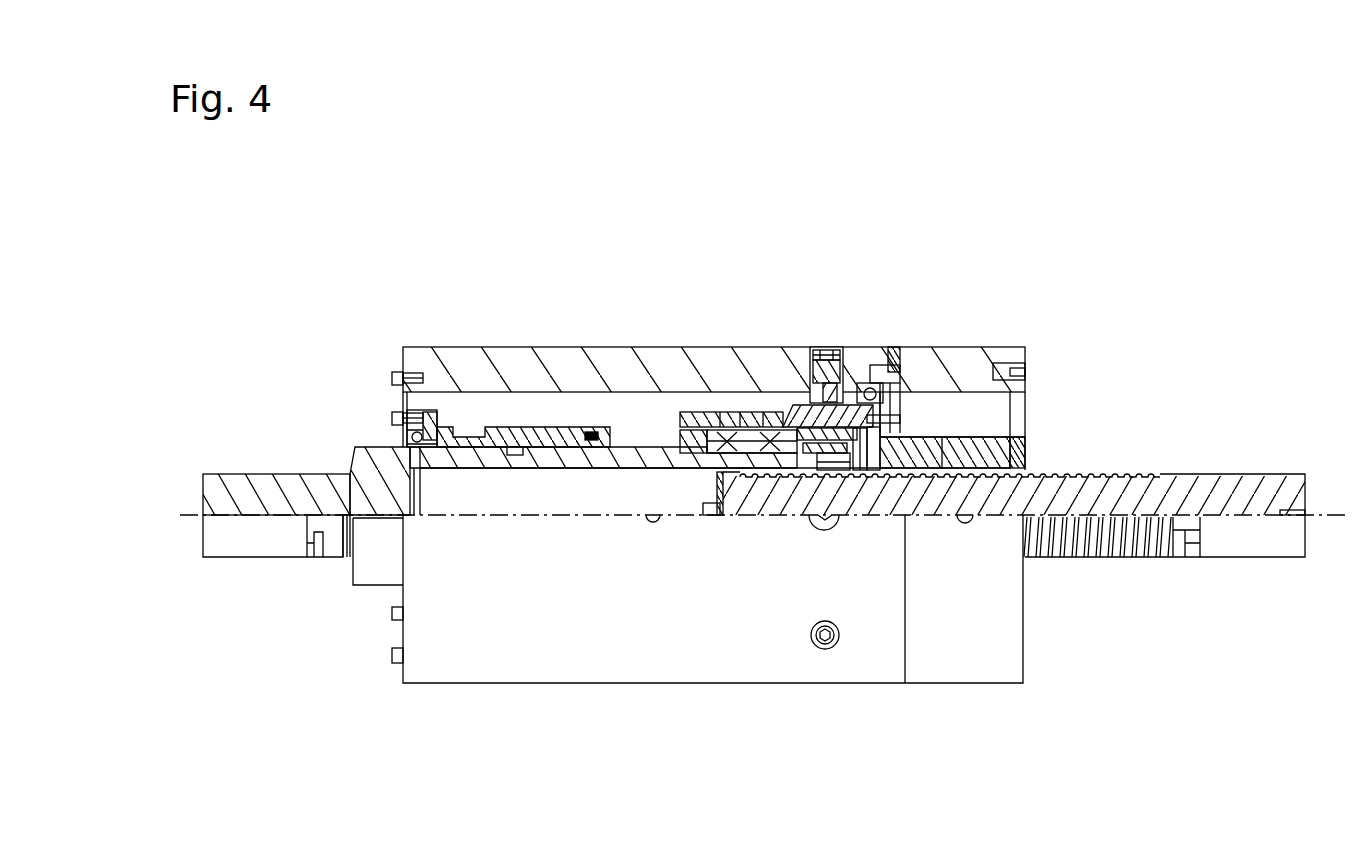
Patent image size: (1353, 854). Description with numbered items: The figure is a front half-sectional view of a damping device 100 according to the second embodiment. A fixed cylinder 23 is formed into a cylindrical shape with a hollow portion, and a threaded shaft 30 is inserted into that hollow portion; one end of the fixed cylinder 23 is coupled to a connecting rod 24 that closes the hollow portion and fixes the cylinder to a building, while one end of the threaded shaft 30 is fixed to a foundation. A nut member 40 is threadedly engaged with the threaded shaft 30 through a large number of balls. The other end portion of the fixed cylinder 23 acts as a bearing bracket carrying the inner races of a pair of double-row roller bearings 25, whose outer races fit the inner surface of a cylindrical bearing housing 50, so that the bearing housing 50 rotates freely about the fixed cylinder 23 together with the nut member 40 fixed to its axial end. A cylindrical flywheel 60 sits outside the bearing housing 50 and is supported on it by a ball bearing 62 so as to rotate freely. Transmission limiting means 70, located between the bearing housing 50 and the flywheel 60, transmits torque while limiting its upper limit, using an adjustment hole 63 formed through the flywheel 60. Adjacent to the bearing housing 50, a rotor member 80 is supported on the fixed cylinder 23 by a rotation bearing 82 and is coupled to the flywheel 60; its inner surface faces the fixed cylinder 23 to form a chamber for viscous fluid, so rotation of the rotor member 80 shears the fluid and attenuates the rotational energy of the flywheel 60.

The damping device 100 is at (1018, 190).
The connecting rod 24 is at (245, 470).
The fixed cylinder 23 is at (640, 447).
The flywheel 60 is at (500, 344).
The rotation bearing 82 is at (408, 436).
The rotor member 80 is at (580, 423).
The double-row roller bearings 25 is at (714, 428).
The bearing housing 50 is at (795, 410).
The adjustment hole 63 is at (808, 345).
The transmission limiting means 70 is at (841, 343).
The ball bearing 62 is at (870, 375).
The nut member 40 is at (1006, 435).
The threaded shaft 30 is at (1197, 470).